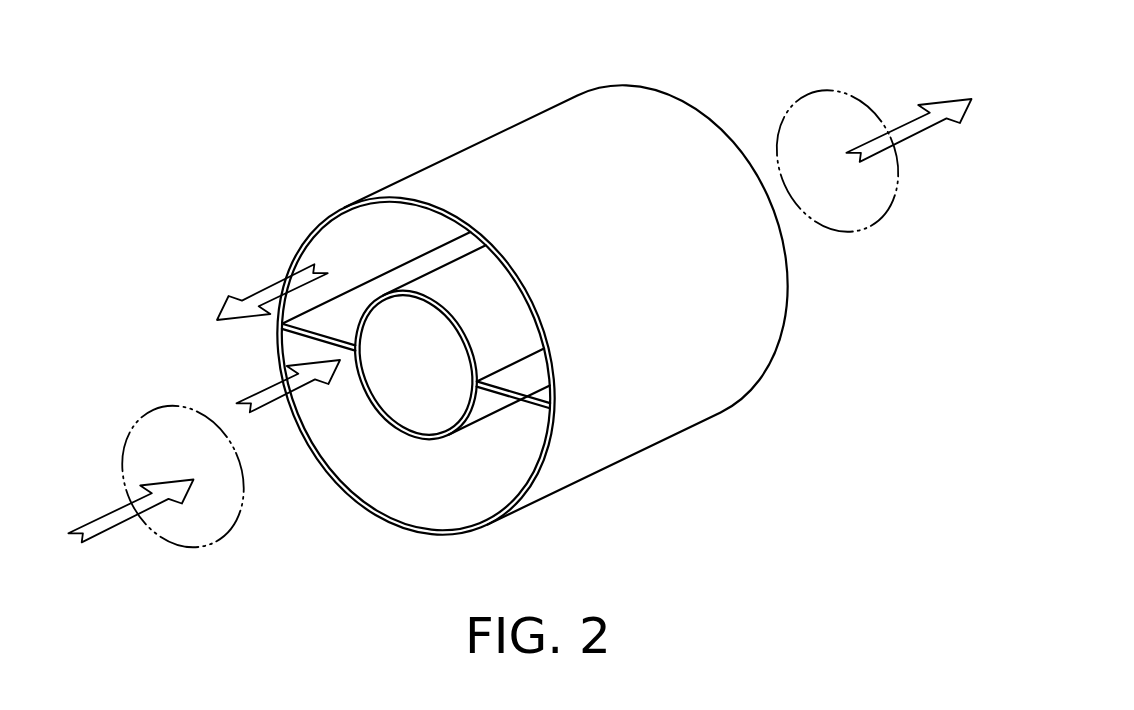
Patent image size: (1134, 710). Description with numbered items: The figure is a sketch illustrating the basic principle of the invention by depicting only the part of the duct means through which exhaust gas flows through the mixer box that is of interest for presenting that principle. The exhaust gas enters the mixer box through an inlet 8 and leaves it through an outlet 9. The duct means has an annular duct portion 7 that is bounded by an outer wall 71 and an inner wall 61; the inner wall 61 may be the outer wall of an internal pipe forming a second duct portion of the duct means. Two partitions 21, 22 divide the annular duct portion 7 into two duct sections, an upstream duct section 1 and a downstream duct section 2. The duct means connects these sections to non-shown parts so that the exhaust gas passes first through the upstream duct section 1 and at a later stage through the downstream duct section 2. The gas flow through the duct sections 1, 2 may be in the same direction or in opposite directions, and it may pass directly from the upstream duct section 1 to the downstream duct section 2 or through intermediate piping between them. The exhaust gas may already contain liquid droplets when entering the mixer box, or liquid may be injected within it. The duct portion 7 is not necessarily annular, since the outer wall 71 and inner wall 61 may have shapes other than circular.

The upstream duct section 1 is at (333, 415).
The downstream duct section 2 is at (348, 248).
The partition 21 is at (327, 318).
The partition 22 is at (540, 376).
The inner wall 61 is at (414, 436).
The annular duct portion 7 is at (441, 488).
The outer wall 71 is at (344, 489).
The inlet 8 is at (140, 420).
The outlet 9 is at (795, 100).